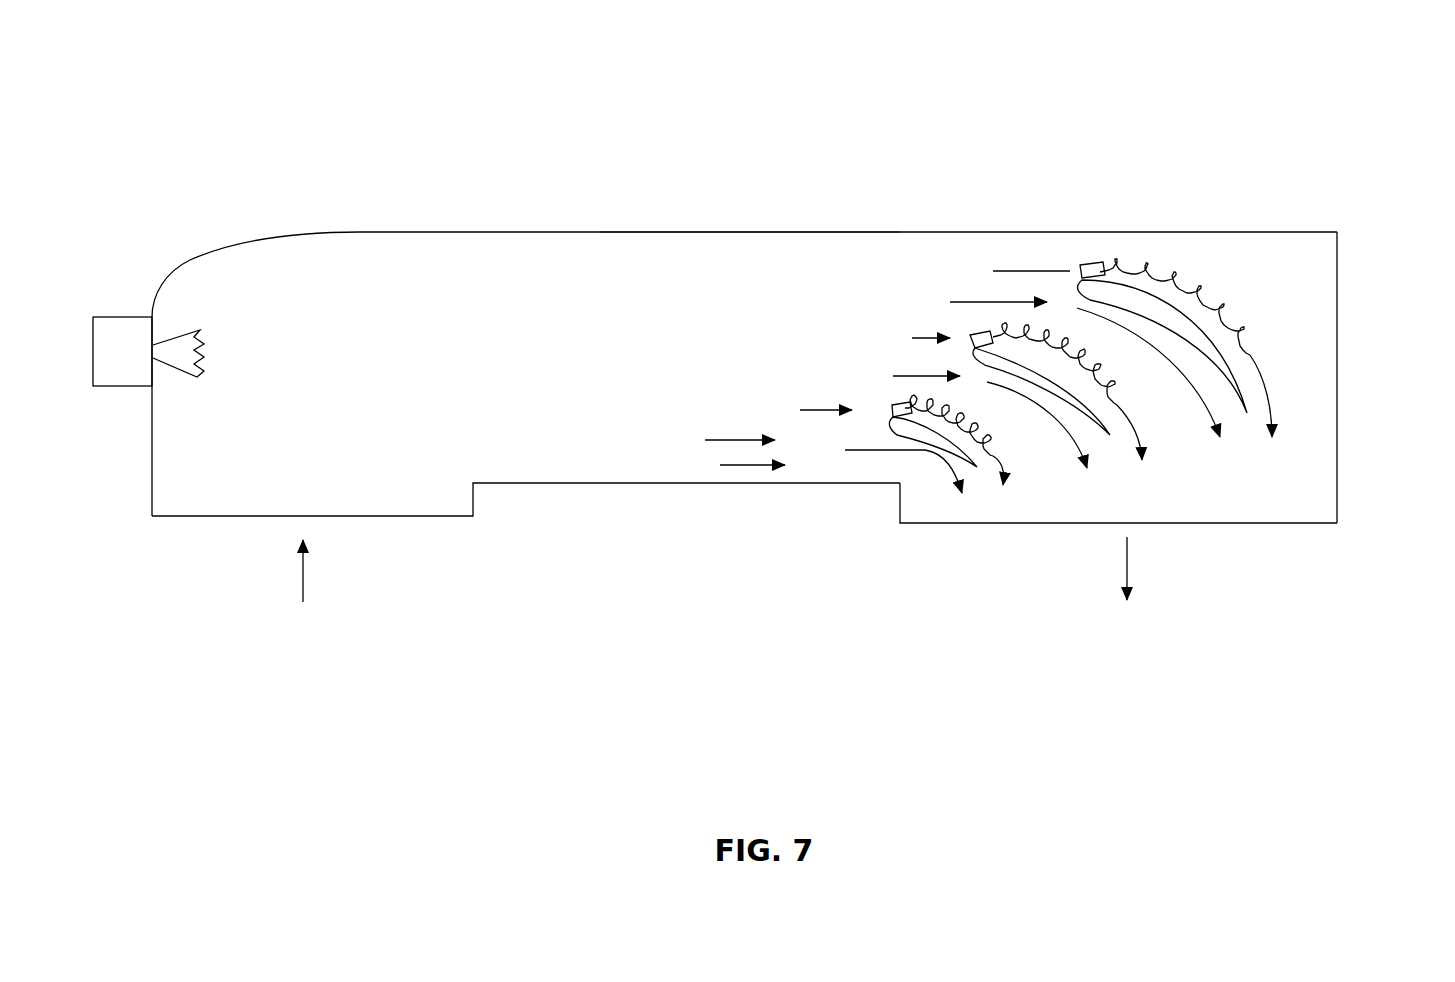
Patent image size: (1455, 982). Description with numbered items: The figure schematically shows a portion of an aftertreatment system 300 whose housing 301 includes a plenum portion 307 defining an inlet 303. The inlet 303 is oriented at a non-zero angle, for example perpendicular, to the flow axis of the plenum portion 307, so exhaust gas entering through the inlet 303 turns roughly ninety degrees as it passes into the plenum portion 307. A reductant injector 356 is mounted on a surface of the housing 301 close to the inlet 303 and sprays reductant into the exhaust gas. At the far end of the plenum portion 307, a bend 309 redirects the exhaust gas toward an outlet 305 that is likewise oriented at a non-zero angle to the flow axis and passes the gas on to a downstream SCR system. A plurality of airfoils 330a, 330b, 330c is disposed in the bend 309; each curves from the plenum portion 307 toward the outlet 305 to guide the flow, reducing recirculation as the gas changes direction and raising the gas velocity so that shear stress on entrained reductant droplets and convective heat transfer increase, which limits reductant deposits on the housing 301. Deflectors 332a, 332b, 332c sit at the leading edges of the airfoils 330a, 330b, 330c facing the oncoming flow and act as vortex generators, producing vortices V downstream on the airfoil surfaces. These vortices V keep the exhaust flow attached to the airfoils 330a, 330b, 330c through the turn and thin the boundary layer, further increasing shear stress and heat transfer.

The aftertreatment system 300 is at (1220, 97).
The housing 301 is at (633, 226).
The inlet 303 is at (215, 505).
The outlet 305 is at (1312, 517).
The plenum portion 307 is at (742, 232).
The bend 309 is at (1340, 450).
The airfoil 330a is at (928, 440).
The airfoil 330b is at (1063, 385).
The airfoil 330c is at (1215, 312).
The deflector 332a is at (903, 402).
The deflector 332b is at (990, 333).
The deflector 332c is at (1094, 262).
The reductant injector 356 is at (117, 317).
The vortices V is at (1155, 262).